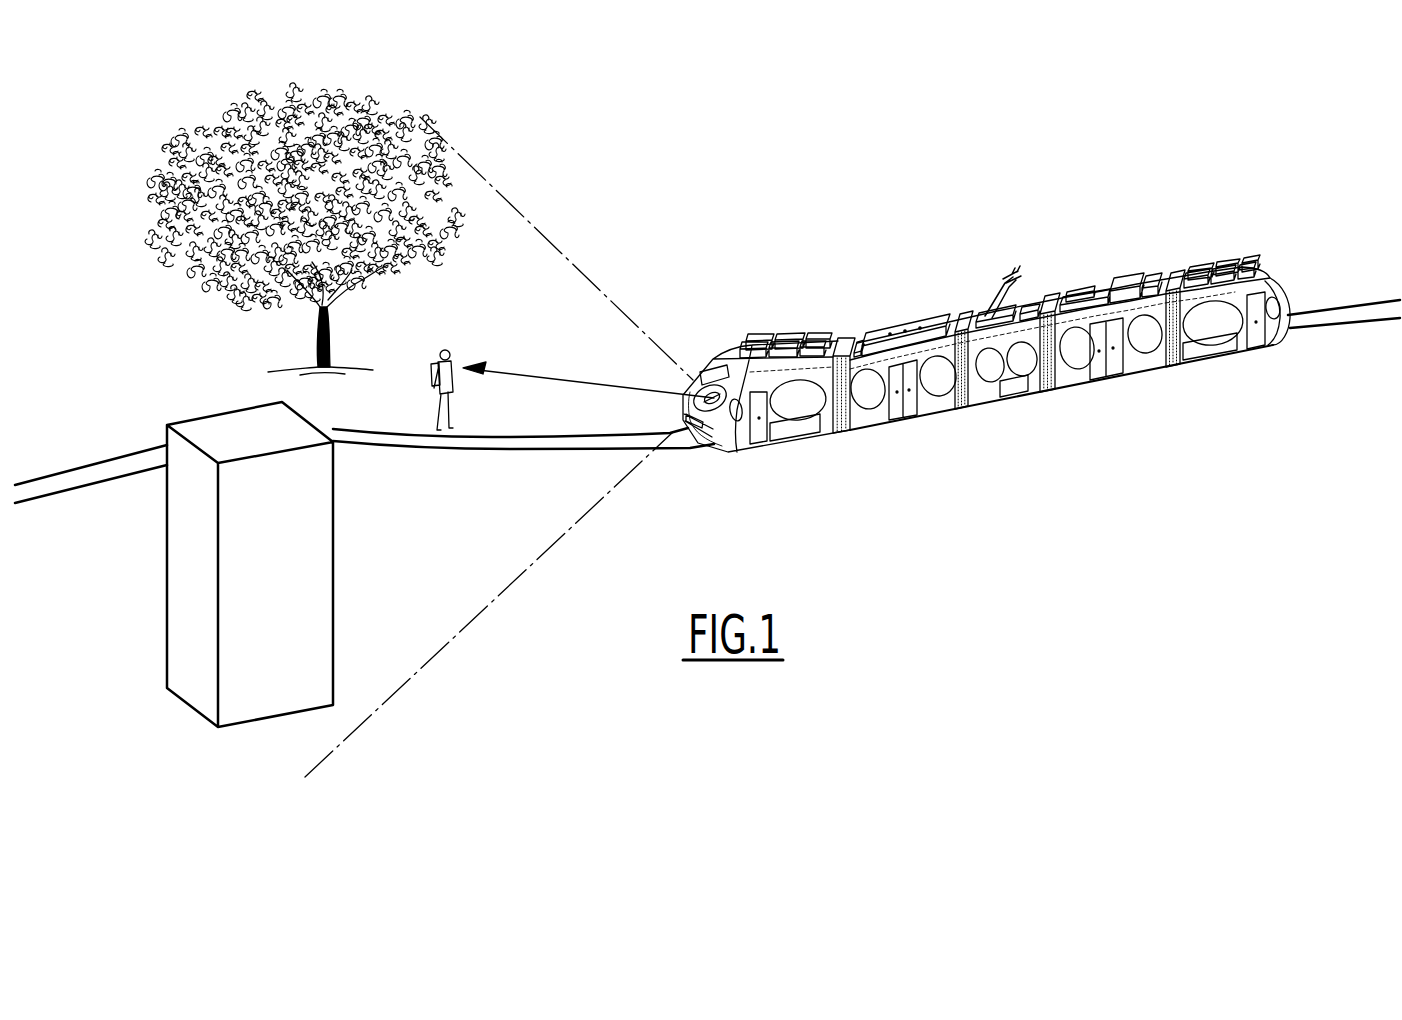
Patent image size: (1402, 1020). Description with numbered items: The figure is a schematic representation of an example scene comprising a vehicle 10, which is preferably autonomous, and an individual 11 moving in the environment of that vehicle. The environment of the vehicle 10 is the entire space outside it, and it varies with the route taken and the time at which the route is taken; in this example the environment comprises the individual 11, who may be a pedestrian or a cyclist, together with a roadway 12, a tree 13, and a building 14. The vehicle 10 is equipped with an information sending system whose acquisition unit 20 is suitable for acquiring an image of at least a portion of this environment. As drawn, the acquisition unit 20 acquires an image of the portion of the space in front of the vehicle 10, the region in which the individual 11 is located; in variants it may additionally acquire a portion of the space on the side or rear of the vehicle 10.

The vehicle 10 is at (986, 379).
The individual 11 is at (455, 367).
The roadway 12 is at (480, 449).
The tree 13 is at (207, 183).
The building 14 is at (183, 636).
The acquisition unit 20 is at (730, 384).